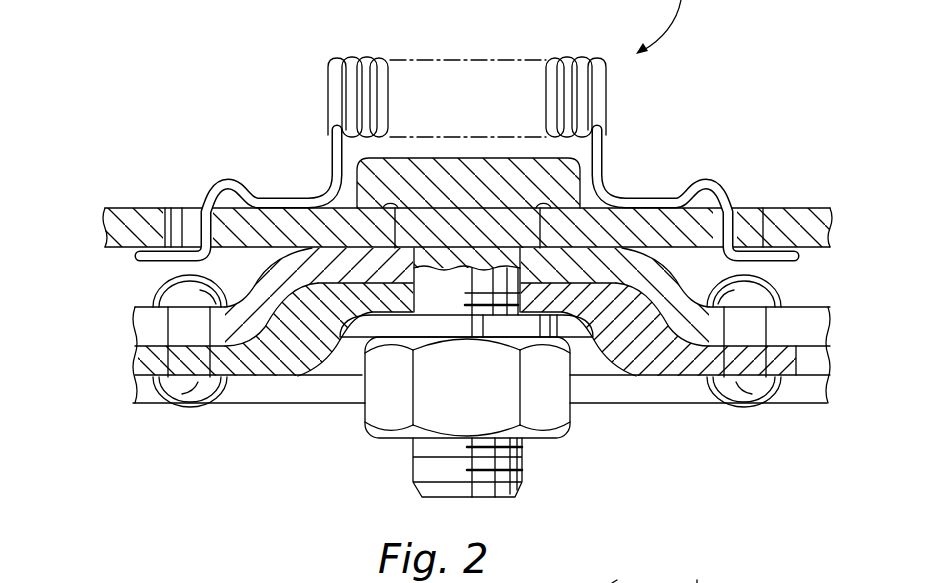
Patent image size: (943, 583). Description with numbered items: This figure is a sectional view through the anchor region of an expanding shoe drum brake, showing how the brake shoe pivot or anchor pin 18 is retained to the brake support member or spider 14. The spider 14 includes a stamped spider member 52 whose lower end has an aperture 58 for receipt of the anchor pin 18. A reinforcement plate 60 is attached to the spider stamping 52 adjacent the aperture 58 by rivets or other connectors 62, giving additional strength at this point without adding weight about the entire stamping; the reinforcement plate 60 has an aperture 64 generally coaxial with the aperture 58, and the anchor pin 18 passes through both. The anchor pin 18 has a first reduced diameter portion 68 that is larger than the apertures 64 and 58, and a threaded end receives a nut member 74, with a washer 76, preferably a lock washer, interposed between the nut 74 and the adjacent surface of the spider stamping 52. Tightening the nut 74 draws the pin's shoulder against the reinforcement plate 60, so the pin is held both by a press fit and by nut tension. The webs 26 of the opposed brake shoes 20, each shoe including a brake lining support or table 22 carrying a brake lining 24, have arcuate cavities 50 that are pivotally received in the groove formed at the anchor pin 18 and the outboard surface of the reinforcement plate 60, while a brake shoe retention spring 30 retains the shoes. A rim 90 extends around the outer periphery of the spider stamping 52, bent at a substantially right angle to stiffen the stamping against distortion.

The brake support member or spider 14 is at (806, 375).
The anchor pin 18 is at (436, 168).
The brake shoes 20 is at (467, 190).
The brake lining support or table 22 is at (617, 580).
The brake lining 24 is at (697, 580).
The webs 26 is at (656, 225).
The brake shoe retention spring 30 is at (358, 60).
The arcuate cavities 50 is at (397, 220).
The stamped spider member 52 is at (644, 372).
The aperture 58 is at (420, 277).
The reinforcement plate 60 is at (692, 332).
The rivets or other connectors 62 is at (755, 393).
The aperture 64 is at (417, 292).
The first reduced diameter portion 68 is at (322, 205).
The nut member 74 is at (393, 420).
The washer 76 is at (395, 335).
The rim 90 is at (293, 393).